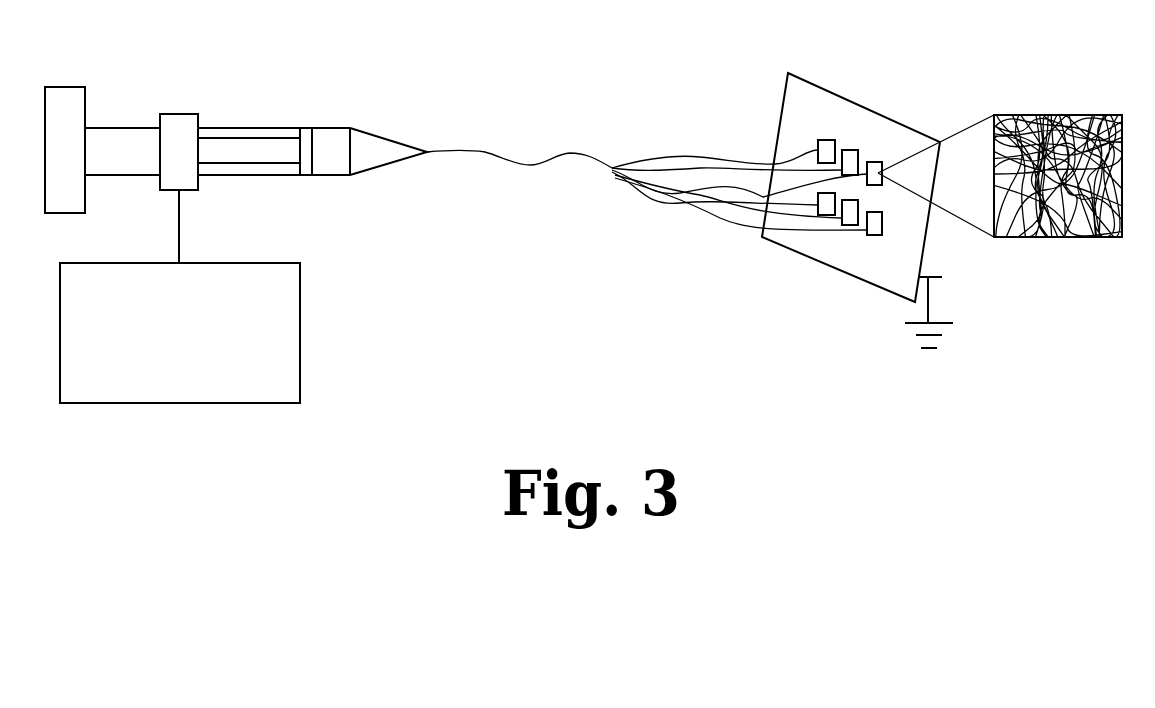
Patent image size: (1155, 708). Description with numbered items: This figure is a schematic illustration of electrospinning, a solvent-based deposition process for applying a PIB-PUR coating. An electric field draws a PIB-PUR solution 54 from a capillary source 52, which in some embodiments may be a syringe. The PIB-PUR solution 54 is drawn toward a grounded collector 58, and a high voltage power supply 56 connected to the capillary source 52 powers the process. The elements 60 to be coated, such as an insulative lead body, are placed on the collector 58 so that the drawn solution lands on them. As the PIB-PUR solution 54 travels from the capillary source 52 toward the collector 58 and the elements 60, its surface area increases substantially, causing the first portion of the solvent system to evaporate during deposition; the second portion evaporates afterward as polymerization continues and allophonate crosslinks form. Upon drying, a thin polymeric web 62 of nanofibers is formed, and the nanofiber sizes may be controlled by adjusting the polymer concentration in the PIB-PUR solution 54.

The capillary source 52 is at (238, 133).
The PIB-PUR solution 54 is at (568, 153).
The high voltage power supply 56 is at (287, 310).
The grounded collector 58 is at (862, 94).
The elements to be coated 60 is at (870, 227).
The polymeric web 62 is at (1065, 115).